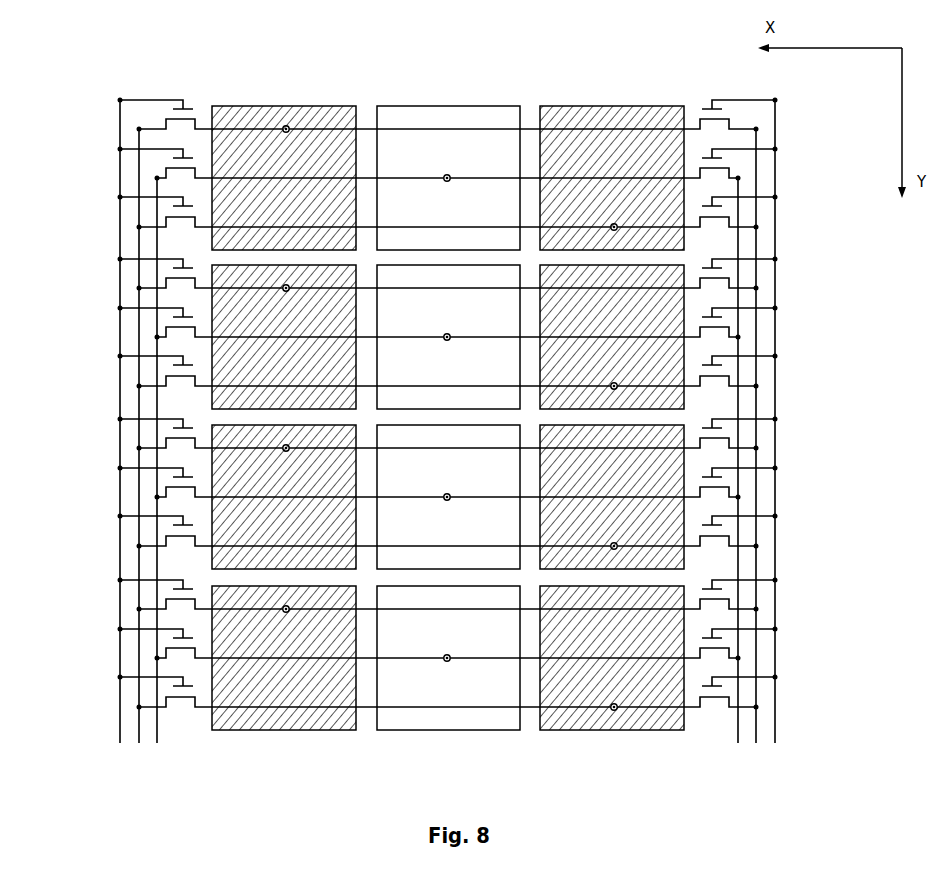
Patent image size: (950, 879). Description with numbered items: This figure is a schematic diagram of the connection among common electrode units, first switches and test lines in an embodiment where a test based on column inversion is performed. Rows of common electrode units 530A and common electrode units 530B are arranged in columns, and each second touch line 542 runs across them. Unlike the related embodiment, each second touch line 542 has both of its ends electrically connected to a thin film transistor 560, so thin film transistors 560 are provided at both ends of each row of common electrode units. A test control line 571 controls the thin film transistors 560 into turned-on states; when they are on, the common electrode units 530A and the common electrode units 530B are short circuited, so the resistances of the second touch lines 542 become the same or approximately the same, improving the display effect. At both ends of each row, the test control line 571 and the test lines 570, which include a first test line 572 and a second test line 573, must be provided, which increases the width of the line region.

The common electrode unit 530A is at (222, 115).
The common electrode unit 530B is at (412, 115).
The second touch line 542 is at (498, 128).
The thin film transistor 560 is at (173, 109).
The test lines 570 is at (53, 135).
The test control line 571 is at (116, 107).
The first test line 572 is at (137, 155).
The second test line 573 is at (157, 220).